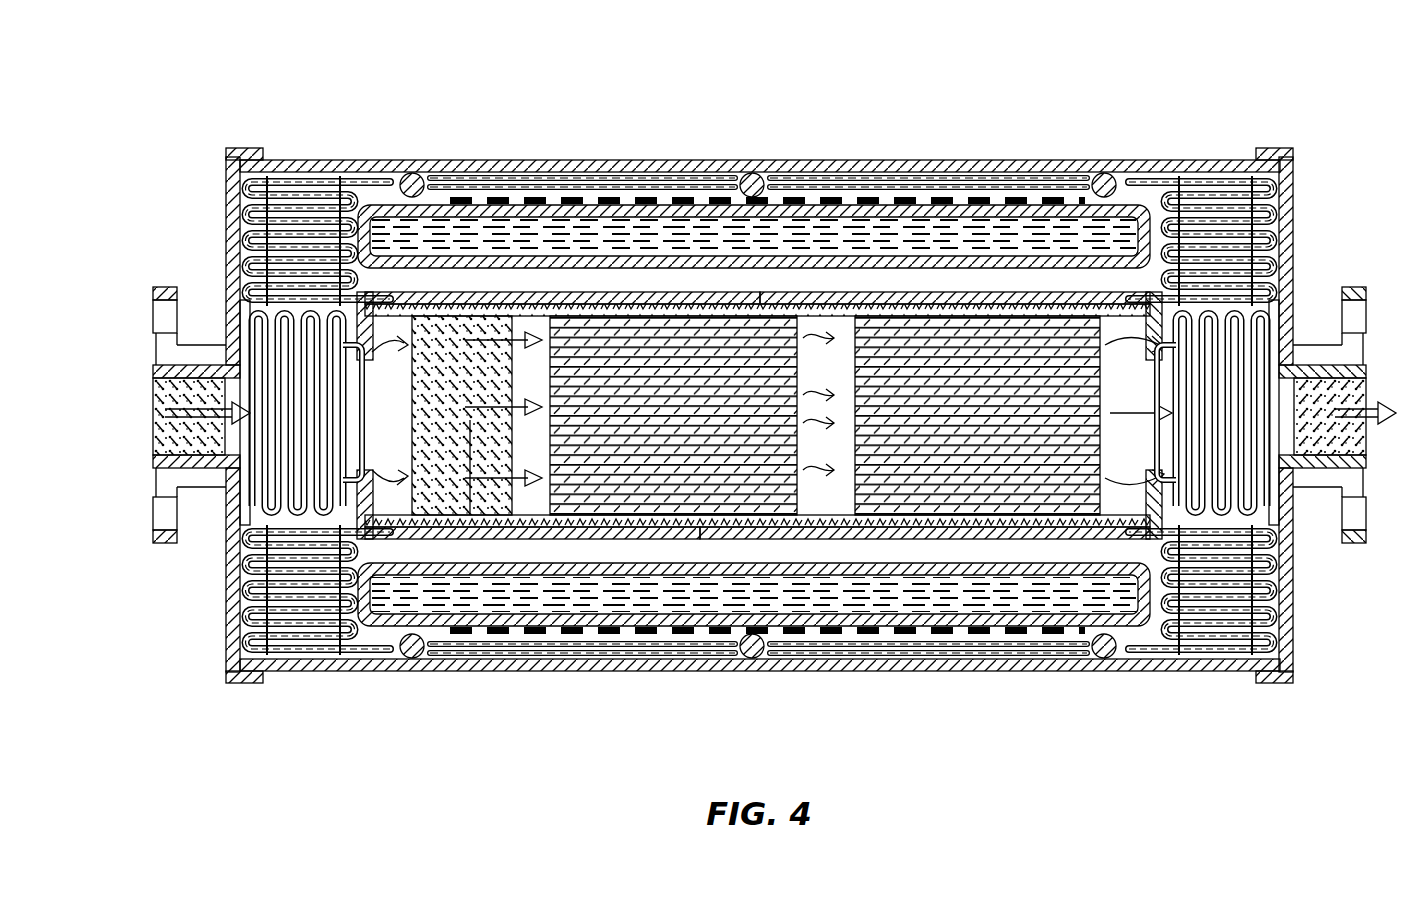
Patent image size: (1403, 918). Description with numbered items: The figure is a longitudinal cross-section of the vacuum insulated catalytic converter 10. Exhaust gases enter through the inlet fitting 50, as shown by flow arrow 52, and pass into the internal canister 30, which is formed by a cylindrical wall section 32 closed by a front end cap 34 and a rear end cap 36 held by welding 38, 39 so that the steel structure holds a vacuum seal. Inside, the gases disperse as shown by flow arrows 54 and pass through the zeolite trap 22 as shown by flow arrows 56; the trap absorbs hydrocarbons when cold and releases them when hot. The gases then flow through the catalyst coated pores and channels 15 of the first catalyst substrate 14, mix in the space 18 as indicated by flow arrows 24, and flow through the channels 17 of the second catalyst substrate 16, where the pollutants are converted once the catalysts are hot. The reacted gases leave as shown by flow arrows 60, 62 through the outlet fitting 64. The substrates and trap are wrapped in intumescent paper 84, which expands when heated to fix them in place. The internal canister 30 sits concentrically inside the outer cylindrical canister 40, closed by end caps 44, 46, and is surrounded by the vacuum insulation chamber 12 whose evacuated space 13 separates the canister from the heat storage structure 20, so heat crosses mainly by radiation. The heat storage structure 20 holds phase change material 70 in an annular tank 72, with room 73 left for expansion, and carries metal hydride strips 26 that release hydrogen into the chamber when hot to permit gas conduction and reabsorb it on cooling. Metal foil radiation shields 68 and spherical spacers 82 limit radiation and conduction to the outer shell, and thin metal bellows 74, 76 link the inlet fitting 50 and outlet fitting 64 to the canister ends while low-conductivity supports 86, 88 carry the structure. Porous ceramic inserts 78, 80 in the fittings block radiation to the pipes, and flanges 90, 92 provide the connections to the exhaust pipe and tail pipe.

The vacuum insulated catalytic converter 10 is at (290, 100).
The vacuum insulation chamber 12 is at (757, 172).
The evacuated space 13 is at (928, 265).
The first catalyst substrate 14 is at (630, 300).
The catalyst coated pores and channels 15 is at (665, 530).
The second catalyst substrate 16 is at (993, 312).
The catalyst coated pores and channels 17 is at (1015, 485).
The space 18 is at (806, 423).
The heat storage structure 20 is at (470, 300).
The zeolite trap 22 is at (448, 318).
The flow arrows 24 is at (858, 522).
The metal hydride strips 26 is at (710, 195).
The internal canister 30 is at (1057, 290).
The cylindrical wall section 32 is at (556, 540).
The front end cap 34 is at (302, 660).
The rear end cap 36 is at (1190, 650).
The welding 38 is at (262, 684).
The welding 39 is at (1250, 684).
The outer cylindrical canister 40 is at (1175, 156).
The end cap 44 is at (228, 192).
The end cap 46 is at (1295, 207).
The inlet fitting 50 is at (215, 330).
The flow arrow 52 is at (155, 420).
The flow arrows 54 is at (372, 458).
The flow arrows 56 is at (500, 515).
The flow arrows 60 is at (1210, 345).
The flow arrows 62 is at (1366, 392).
The outlet fitting 64 is at (1320, 368).
The metal foil radiation shields 68 is at (398, 640).
The phase change material 70 is at (838, 228).
The annular tank 72 is at (400, 178).
The room 73 is at (935, 298).
The metal bellows 74 is at (222, 572).
The metal bellows 76 is at (1294, 560).
The porous ceramic insert 78 is at (153, 442).
The porous ceramic insert 80 is at (1362, 440).
The spherical spacers 82 is at (752, 660).
The intumescent paper 84 is at (718, 520).
The support 86 is at (345, 230).
The support 88 is at (1185, 300).
The flange 90 is at (162, 545).
The flange 92 is at (1345, 548).